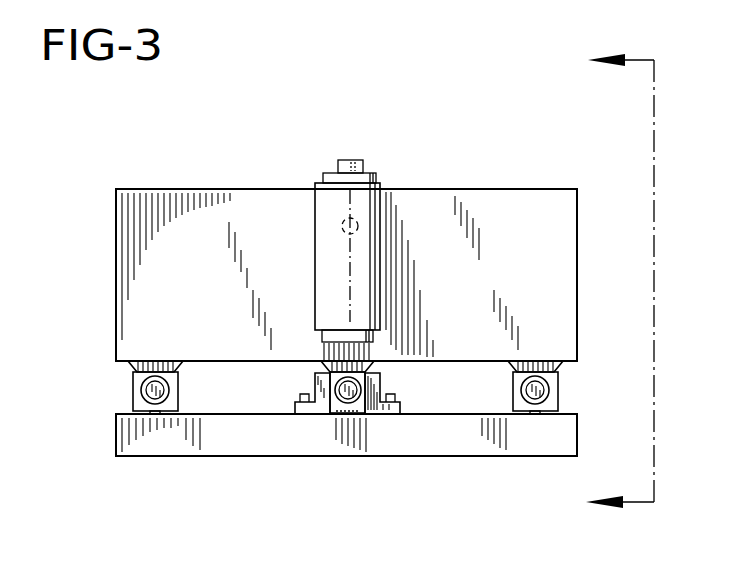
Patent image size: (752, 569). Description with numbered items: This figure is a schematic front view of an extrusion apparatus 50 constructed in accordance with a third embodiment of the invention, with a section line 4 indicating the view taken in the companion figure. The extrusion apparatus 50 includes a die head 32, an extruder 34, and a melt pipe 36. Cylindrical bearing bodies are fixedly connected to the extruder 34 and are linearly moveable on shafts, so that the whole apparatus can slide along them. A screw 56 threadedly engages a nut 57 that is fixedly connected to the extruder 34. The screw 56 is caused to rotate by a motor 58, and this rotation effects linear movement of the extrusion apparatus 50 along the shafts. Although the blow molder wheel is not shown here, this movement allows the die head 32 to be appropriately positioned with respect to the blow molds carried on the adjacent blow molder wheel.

The section line 4- 4 is at (634, 284).
The die head 32 is at (372, 214).
The extruder 34 is at (568, 238).
The melt pipe 36 is at (338, 229).
The extrusion apparatus 50 is at (518, 168).
The screw 56 is at (345, 405).
The nut 57 is at (365, 418).
The motor 58 is at (380, 384).